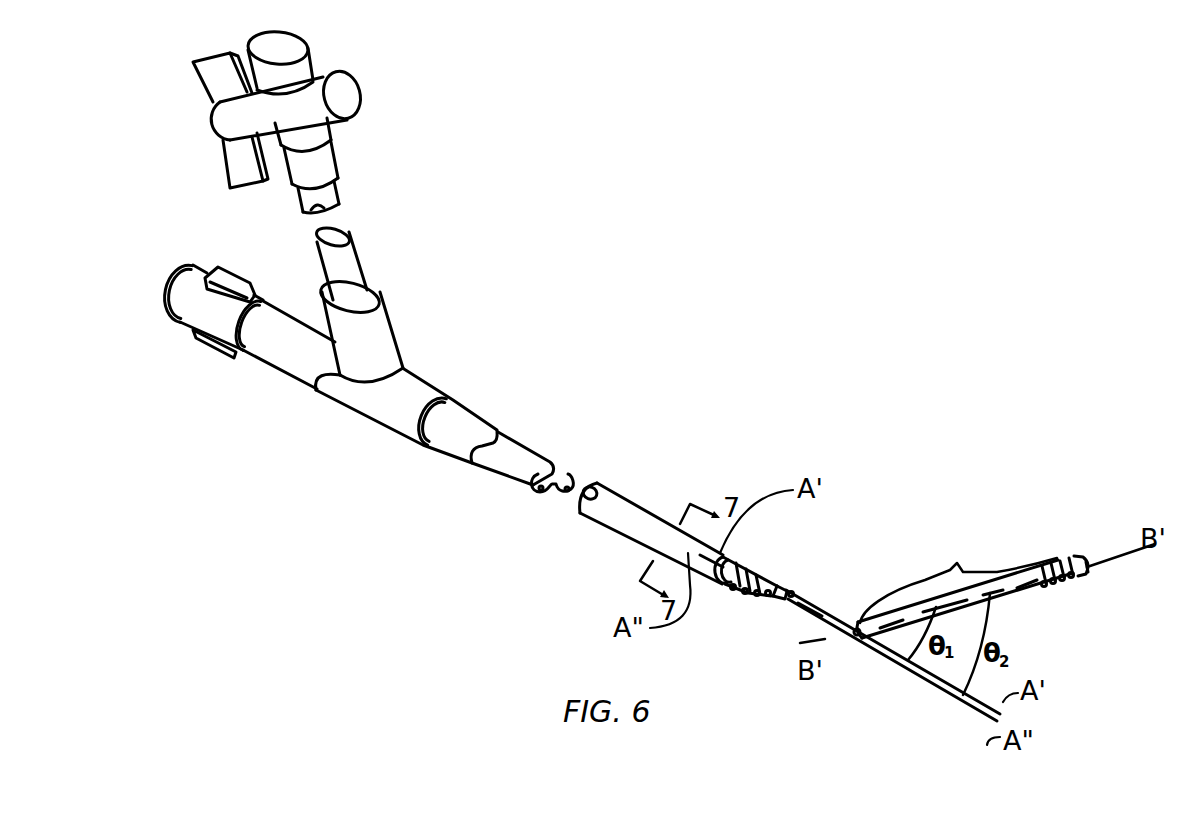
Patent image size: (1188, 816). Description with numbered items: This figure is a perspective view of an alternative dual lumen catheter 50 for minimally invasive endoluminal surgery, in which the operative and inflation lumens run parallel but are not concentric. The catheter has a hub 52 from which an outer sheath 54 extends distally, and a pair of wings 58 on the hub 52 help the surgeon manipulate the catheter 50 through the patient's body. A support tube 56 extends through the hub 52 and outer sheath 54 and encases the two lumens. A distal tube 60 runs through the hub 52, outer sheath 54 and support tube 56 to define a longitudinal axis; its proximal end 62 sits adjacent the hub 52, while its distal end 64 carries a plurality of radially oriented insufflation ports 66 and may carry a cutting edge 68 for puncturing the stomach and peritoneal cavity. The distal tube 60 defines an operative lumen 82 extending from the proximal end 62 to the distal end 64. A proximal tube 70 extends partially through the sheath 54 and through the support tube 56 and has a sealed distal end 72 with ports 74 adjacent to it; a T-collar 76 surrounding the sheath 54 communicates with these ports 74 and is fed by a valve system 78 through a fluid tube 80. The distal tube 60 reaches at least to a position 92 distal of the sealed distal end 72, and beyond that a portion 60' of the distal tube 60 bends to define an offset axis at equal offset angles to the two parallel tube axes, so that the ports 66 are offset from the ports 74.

The dual lumen catheter 50 is at (588, 214).
The hub 52 is at (197, 310).
The outer sheath 54 is at (280, 347).
The support tube 56 is at (620, 490).
The wings 58 is at (237, 283).
The distal tube 60 is at (781, 568).
The portion of the distal tube 60' is at (958, 574).
The proximal end 62 is at (155, 287).
The distal end 64 is at (1045, 590).
The ports 66 is at (1050, 560).
The cutting edge 68 is at (1091, 571).
The proximal tube 70 is at (533, 493).
The sealed distal end 72 is at (771, 598).
The ports 74 is at (734, 588).
The T-collar 76 is at (417, 383).
The valve system 78 is at (343, 93).
The fluid tube 80 is at (347, 258).
The operative lumen 82 is at (1082, 565).
The position 92 is at (853, 620).